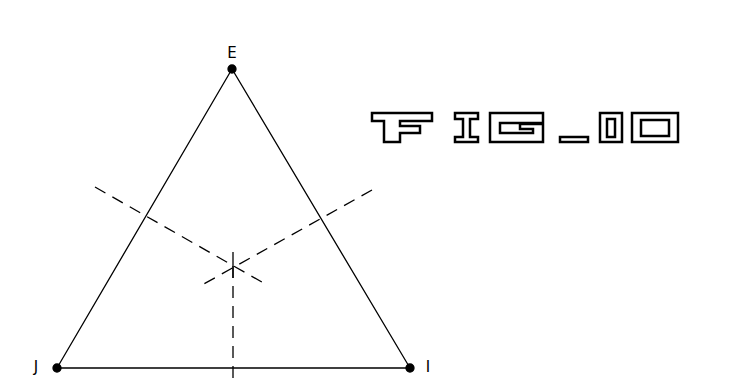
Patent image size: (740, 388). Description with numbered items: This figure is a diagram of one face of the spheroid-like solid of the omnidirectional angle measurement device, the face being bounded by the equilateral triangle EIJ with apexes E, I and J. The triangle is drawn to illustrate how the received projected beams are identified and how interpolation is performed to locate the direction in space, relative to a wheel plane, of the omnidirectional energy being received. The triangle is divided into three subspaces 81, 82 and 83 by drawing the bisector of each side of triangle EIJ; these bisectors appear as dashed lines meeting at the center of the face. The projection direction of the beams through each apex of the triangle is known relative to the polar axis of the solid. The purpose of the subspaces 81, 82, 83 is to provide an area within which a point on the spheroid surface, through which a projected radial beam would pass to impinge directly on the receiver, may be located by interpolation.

The subspace 81 is at (222, 175).
The subspace 82 is at (148, 285).
The subspace 83 is at (308, 296).